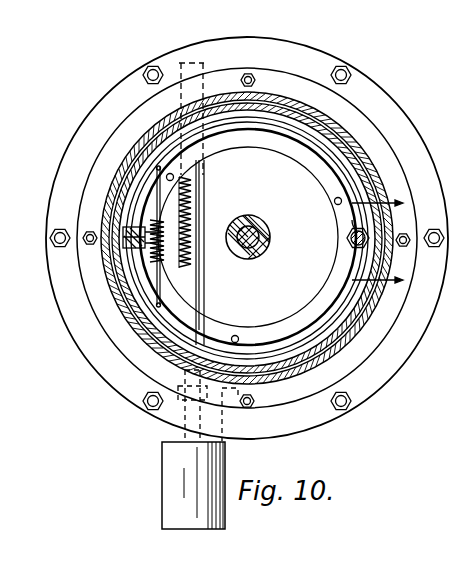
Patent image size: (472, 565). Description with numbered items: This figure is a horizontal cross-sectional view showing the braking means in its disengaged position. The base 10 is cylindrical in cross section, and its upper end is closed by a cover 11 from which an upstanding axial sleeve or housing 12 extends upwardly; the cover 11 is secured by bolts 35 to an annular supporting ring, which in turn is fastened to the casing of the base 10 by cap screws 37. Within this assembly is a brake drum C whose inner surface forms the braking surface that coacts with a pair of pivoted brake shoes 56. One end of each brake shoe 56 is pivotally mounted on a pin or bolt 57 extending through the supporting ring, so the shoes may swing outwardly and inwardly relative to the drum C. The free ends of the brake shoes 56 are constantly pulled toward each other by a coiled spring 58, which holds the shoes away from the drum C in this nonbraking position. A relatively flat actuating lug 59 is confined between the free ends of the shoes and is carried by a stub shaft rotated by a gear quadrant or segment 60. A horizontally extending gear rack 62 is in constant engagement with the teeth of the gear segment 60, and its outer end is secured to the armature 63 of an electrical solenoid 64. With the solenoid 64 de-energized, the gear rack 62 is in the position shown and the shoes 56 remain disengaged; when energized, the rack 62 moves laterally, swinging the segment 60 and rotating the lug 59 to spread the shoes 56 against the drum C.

The base 10 is at (92, 113).
The cover 11 is at (122, 168).
The axial sleeve or housing 12 is at (379, 245).
The bolts 35 is at (252, 64).
The cap screws 37 is at (352, 76).
The brake shoes 56 is at (328, 155).
The pin or bolt 57 is at (346, 240).
The coiled spring 58 is at (146, 268).
The actuating lug 59 is at (118, 207).
The gear quadrant or segment 60 is at (184, 258).
The gear rack 62 is at (204, 292).
The armature 63 is at (172, 441).
The electrical solenoid 64 is at (180, 488).
The brake drum C is at (270, 98).